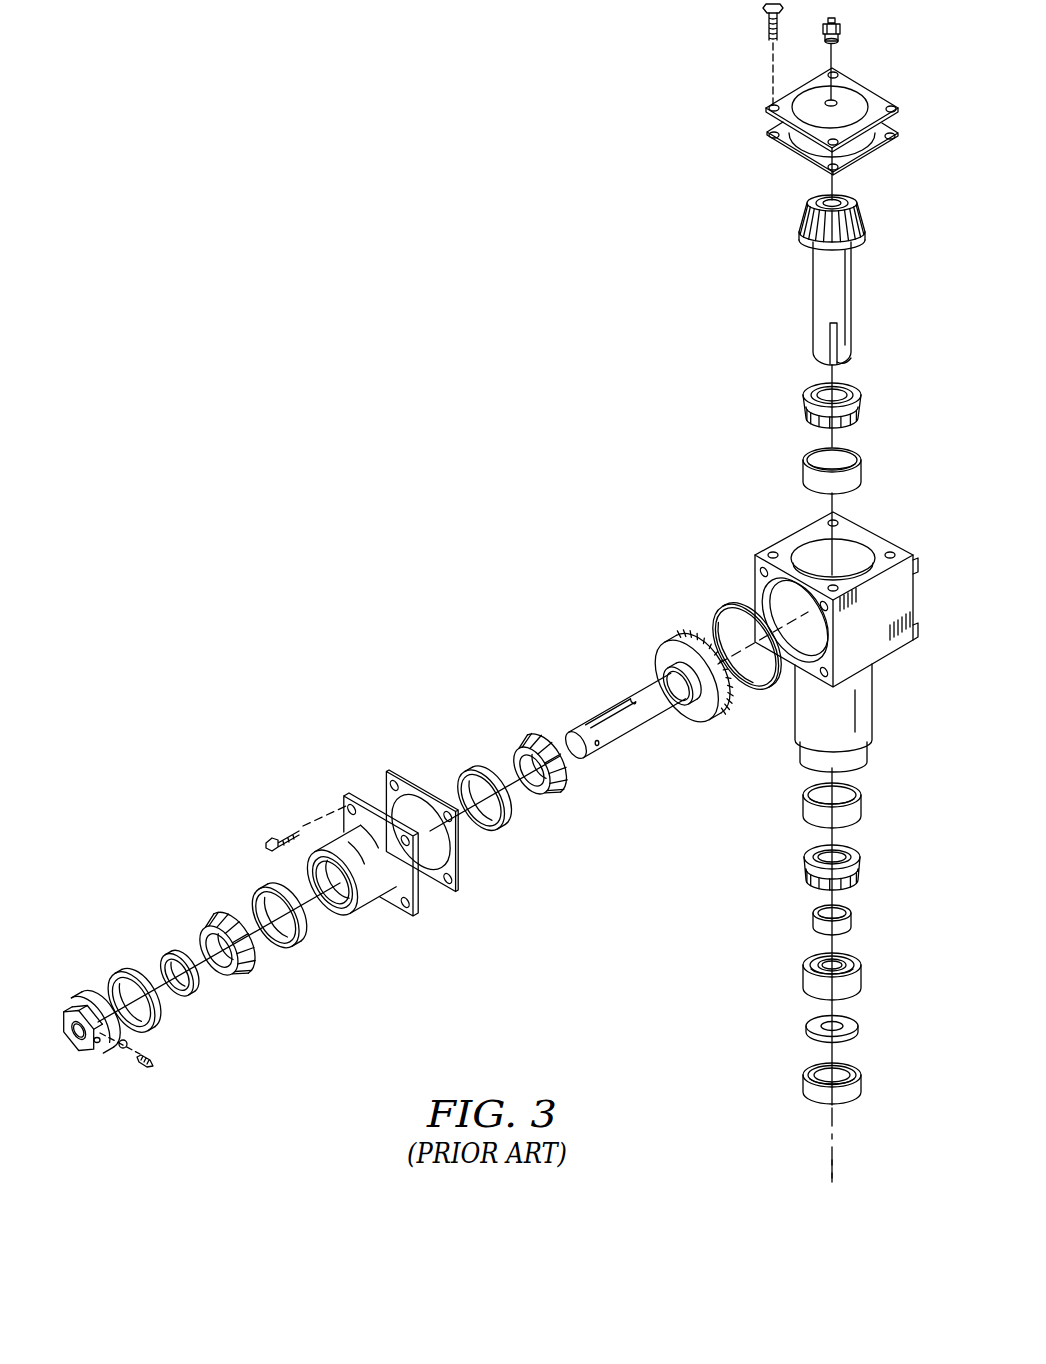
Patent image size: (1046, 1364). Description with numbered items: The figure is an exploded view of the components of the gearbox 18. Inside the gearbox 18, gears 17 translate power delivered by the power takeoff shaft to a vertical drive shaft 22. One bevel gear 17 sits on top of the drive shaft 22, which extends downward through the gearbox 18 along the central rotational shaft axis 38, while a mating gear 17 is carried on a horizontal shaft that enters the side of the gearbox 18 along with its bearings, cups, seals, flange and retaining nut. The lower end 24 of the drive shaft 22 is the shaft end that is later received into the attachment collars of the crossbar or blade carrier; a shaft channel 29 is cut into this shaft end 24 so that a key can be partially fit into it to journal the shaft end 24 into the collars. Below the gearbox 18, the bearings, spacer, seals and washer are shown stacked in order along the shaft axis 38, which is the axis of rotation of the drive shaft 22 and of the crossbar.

The gears 17 is at (812, 200).
The vertical drive shaft 22 is at (822, 288).
The shaft channel 29 is at (830, 345).
The lower end of the drive shaft 24 is at (852, 362).
The gearbox 18 is at (790, 538).
The central rotational shaft axis 38 is at (830, 1168).